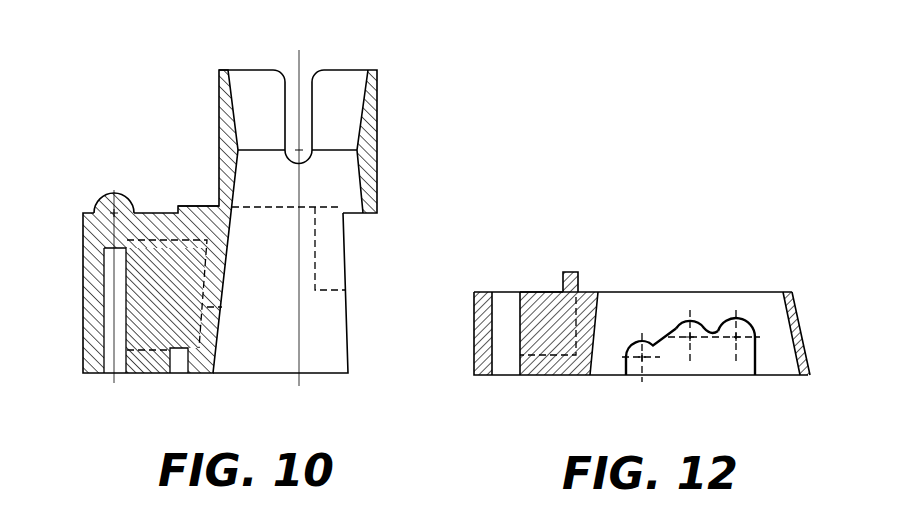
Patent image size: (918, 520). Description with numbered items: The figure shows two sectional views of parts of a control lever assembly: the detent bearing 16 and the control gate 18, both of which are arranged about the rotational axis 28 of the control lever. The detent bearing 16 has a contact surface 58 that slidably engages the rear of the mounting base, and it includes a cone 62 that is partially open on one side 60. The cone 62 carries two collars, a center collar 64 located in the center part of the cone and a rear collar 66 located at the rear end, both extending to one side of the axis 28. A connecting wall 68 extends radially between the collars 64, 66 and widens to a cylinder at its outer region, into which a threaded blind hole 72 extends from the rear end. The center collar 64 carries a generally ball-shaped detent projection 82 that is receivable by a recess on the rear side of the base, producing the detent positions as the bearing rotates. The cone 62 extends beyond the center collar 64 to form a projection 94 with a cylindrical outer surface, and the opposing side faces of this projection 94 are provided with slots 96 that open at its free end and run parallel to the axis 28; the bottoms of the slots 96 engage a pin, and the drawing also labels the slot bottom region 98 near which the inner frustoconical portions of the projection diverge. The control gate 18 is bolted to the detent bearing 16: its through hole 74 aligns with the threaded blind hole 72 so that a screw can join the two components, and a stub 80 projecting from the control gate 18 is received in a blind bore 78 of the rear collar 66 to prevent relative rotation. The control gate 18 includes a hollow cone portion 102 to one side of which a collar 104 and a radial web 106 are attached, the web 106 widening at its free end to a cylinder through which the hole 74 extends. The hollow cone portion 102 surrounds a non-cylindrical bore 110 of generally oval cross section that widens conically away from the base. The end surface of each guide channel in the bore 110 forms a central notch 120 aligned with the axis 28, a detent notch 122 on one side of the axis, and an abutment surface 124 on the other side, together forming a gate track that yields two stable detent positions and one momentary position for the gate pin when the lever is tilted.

In FIG. 10, the detent bearing 16 is at (144, 246).
In FIG. 12, the control gate 18 is at (637, 305).
In FIG. 10, the axis 28 is at (300, 357).
In FIG. 12, the axis 28 is at (692, 355).
In FIG. 10, the contact surface 58 is at (194, 206).
In FIG. 10, the side 60 is at (388, 284).
In FIG. 10, the cone 62 is at (222, 307).
In FIG. 10, the center collar 64 is at (158, 212).
In FIG. 10, the rear collar 66 is at (140, 373).
In FIG. 10, the connecting wall 68 is at (132, 302).
In FIG. 10, the threaded blind hole 72 is at (112, 355).
In FIG. 12, the through hole 74 is at (503, 295).
In FIG. 10, the blind bore 78 is at (181, 365).
In FIG. 12, the stub 80 is at (570, 272).
In FIG. 10, the detent projection 82 is at (114, 212).
In FIG. 10, the projection 94 is at (377, 133).
In FIG. 10, the slots 96 is at (306, 84).
In FIG. 10, the slot bottom 98 is at (318, 156).
In FIG. 12, the hollow cone portion 102 is at (805, 375).
In FIG. 12, the collar 104 is at (548, 375).
In FIG. 12, the radial web 106 is at (535, 298).
In FIG. 12, the non-cylindrical bore 110 is at (623, 298).
In FIG. 12, the central notch 120 is at (694, 318).
In FIG. 12, the detent notch 122 is at (745, 318).
In FIG. 12, the abutment surface 124 is at (653, 375).